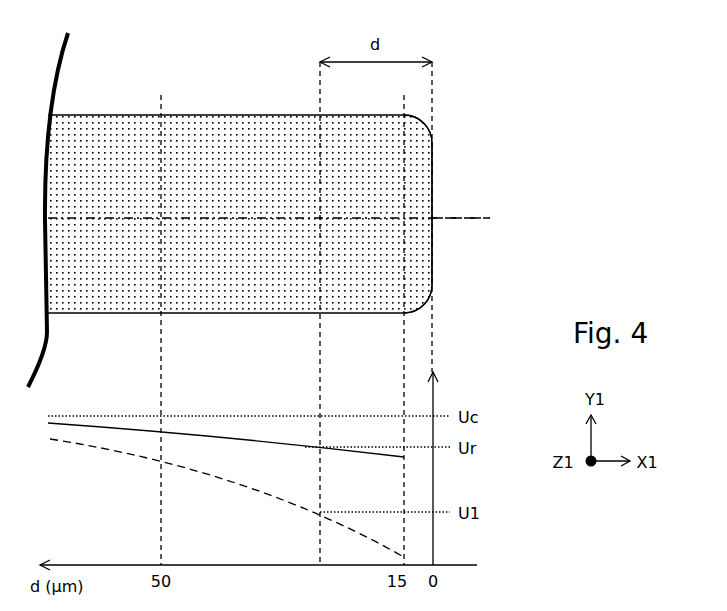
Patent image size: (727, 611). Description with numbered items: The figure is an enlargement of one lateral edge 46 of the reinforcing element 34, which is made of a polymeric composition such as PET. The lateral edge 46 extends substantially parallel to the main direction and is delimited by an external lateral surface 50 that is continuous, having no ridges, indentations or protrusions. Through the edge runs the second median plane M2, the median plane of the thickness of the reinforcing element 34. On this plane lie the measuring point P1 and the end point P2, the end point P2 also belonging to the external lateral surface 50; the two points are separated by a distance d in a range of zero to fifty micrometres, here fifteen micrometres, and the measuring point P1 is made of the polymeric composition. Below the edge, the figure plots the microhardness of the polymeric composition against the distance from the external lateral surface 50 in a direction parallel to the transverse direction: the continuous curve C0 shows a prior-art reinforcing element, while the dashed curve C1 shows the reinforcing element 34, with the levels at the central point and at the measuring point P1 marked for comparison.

The reinforcing element 34 is at (128, 75).
The lateral edge 46 is at (462, 117).
The external lateral surface 50 is at (432, 233).
The measuring point P1 is at (320, 218).
The end point P2 is at (432, 218).
The second median plane M2 is at (478, 218).
The curve C0 is at (305, 447).
The curve C1 is at (265, 495).